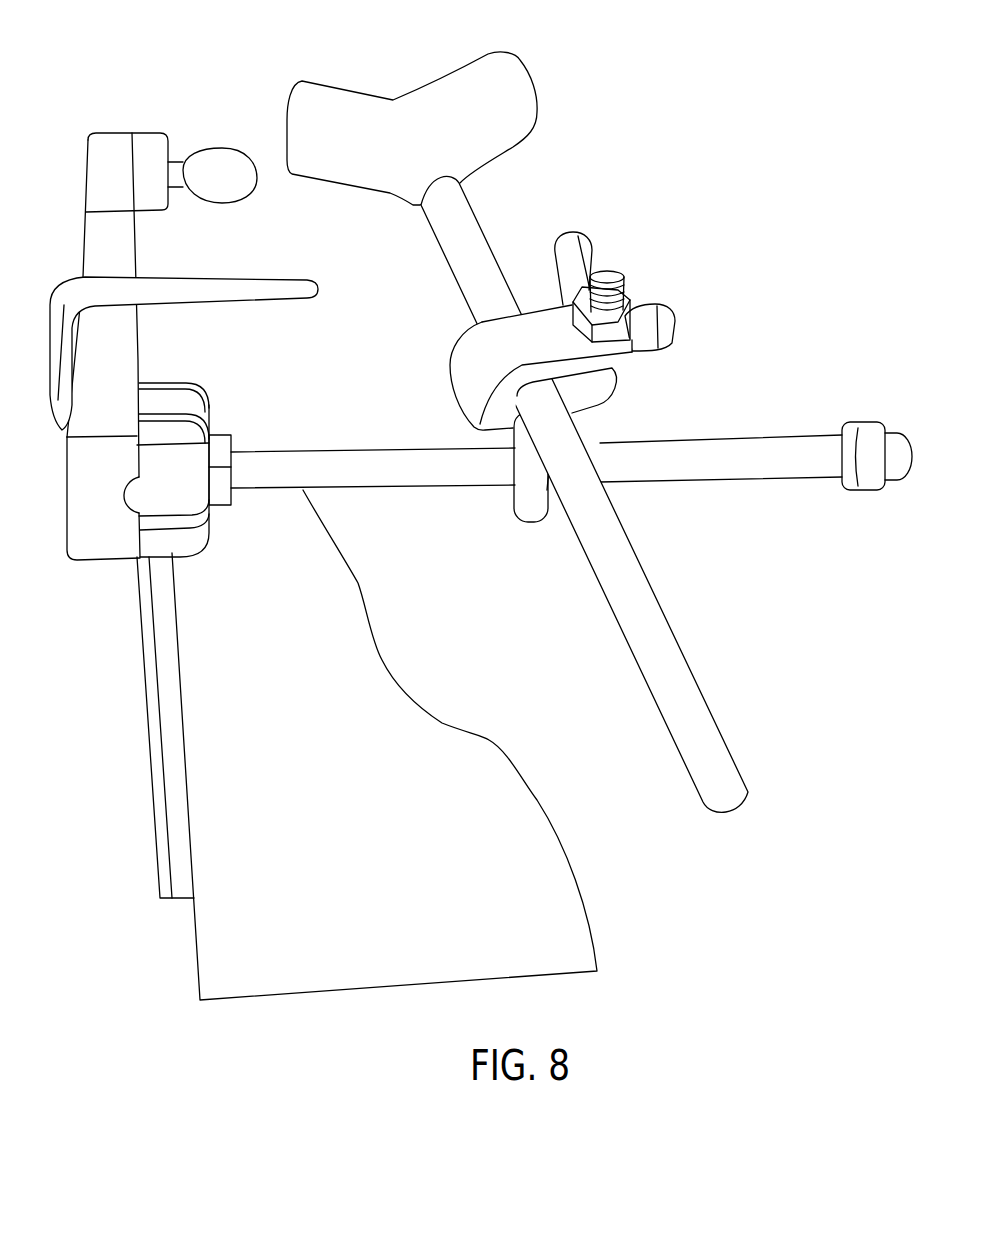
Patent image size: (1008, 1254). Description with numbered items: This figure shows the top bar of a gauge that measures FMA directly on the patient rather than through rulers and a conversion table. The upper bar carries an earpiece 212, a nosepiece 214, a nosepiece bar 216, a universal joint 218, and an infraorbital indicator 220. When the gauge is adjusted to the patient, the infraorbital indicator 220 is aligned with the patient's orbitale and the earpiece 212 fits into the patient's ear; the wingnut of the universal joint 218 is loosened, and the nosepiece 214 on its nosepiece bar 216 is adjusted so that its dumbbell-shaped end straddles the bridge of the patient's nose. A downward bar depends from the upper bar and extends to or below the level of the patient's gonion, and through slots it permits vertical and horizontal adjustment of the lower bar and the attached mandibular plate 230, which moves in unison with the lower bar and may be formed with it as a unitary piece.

The earpiece 212 is at (217, 157).
The nosepiece 214 is at (498, 65).
The nosepiece bar 216 is at (783, 470).
The universal joint 218 is at (597, 352).
The infraorbital indicator 220 is at (267, 285).
The mandibular plate 230 is at (347, 983).